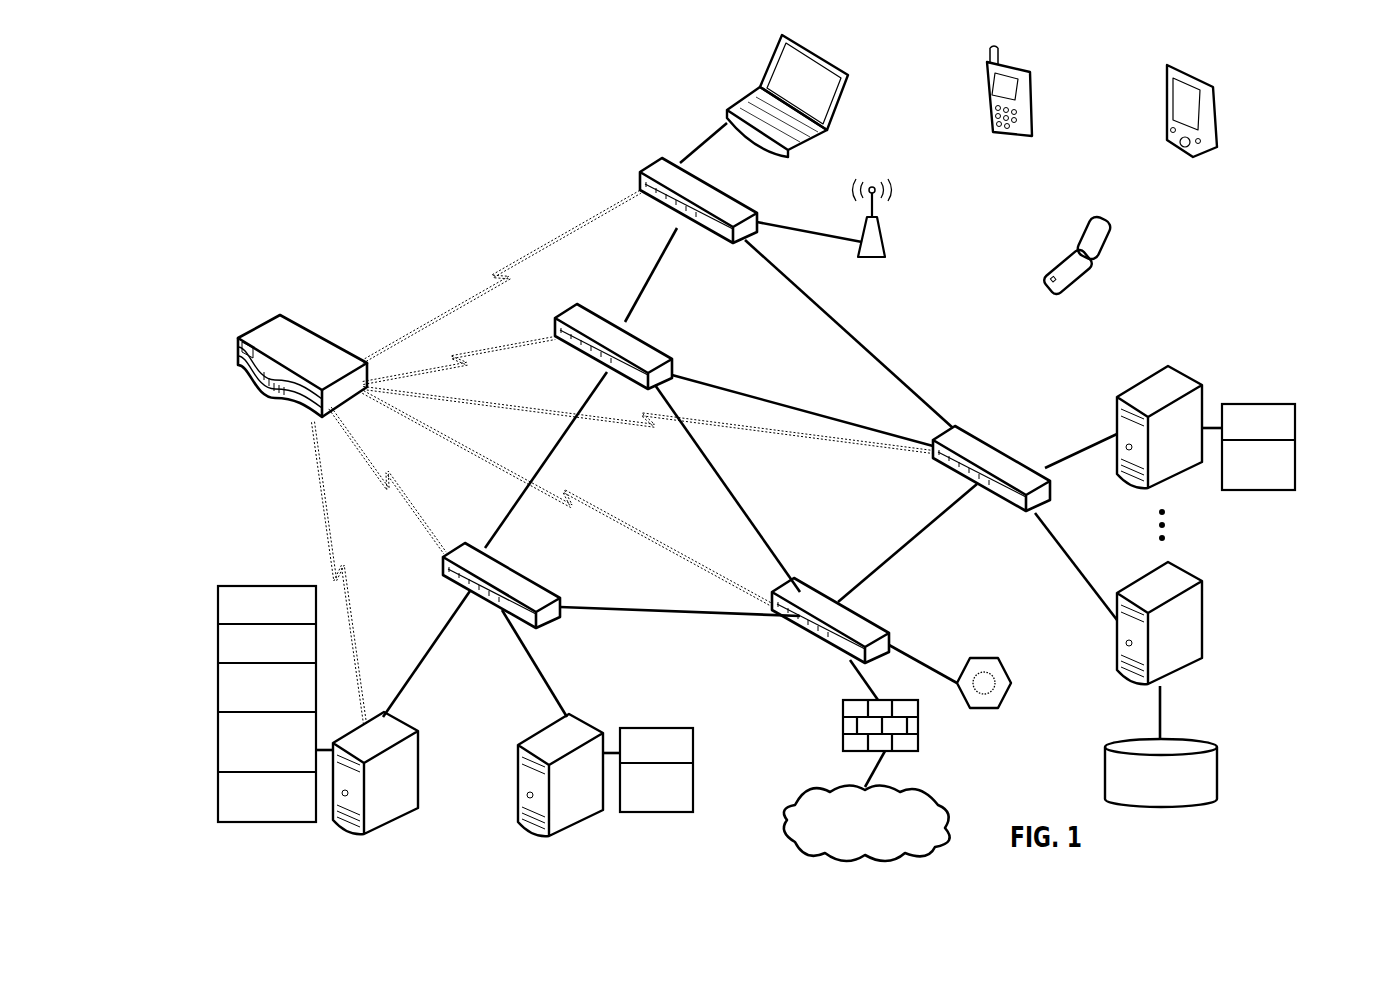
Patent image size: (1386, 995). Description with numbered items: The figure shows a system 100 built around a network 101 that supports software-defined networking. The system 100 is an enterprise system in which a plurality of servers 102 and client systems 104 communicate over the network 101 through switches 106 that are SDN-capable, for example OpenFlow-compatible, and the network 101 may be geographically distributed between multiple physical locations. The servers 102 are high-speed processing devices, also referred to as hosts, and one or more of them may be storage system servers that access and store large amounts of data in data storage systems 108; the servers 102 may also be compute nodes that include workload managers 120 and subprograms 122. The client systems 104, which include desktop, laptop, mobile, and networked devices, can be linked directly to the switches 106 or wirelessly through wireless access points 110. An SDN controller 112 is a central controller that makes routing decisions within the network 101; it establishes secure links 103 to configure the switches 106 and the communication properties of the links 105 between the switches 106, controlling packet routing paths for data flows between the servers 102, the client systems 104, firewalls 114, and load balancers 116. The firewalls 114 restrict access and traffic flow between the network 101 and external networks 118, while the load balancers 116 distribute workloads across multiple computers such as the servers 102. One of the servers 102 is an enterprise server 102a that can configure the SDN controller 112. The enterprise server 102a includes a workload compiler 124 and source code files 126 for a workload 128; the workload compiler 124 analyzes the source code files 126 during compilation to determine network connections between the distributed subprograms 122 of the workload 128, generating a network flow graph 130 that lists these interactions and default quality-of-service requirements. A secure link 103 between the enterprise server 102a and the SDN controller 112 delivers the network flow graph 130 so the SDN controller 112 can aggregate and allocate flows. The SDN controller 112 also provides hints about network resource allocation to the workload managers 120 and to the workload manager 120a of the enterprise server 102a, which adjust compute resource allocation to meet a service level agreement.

The system 100 is at (321, 90).
The network 101 is at (553, 168).
The servers 102 is at (565, 700).
The enterprise server 102a is at (408, 728).
The secure links 103 is at (495, 272).
The client systems 104 is at (832, 60).
The links 105 is at (652, 248).
The switches 106 is at (762, 210).
The data storage systems 108 is at (1176, 789).
The wireless access points 110 is at (890, 232).
The SDN controller 112 is at (290, 318).
The firewalls 114 is at (843, 703).
The load balancers 116 is at (993, 657).
The external networks 118 is at (882, 834).
The workload managers 120 is at (624, 726).
The workload manager 120a is at (240, 585).
The subprograms 122 is at (662, 813).
The workload compiler 124 is at (218, 732).
The source code files 126 is at (218, 786).
The workload 128 is at (218, 635).
The network flow graph 130 is at (218, 678).